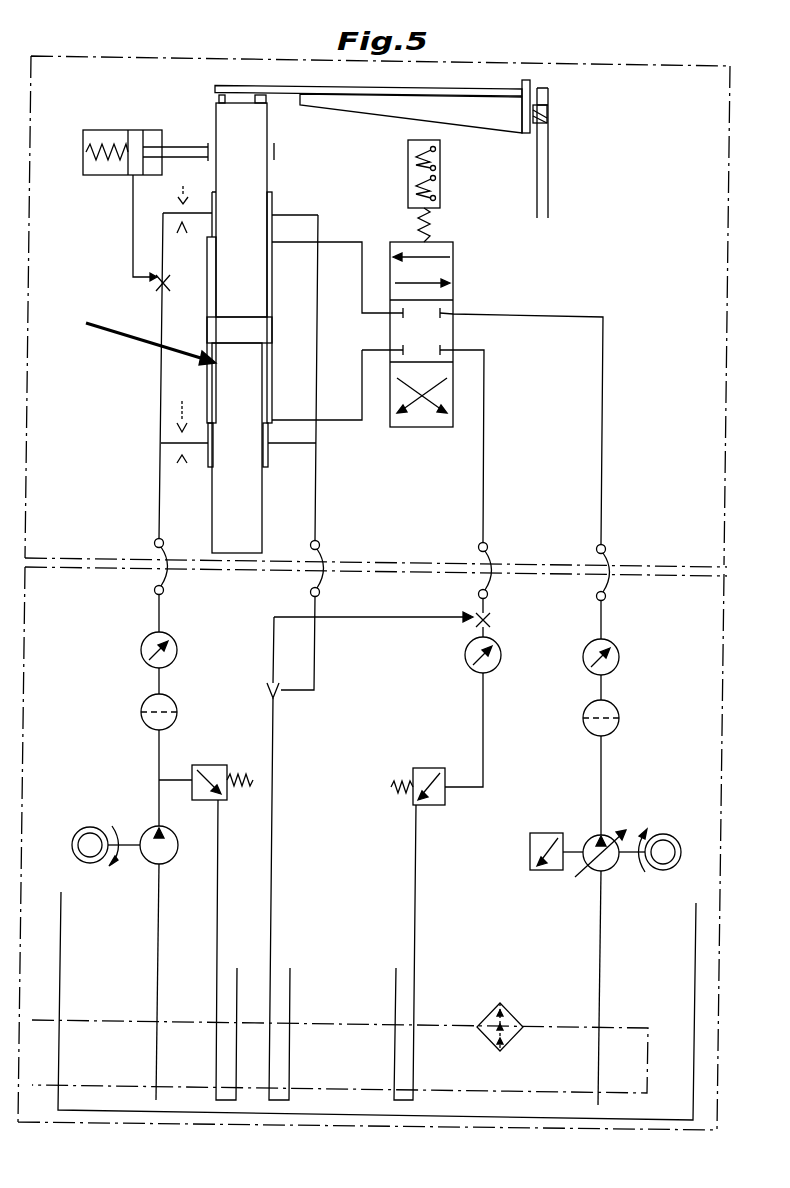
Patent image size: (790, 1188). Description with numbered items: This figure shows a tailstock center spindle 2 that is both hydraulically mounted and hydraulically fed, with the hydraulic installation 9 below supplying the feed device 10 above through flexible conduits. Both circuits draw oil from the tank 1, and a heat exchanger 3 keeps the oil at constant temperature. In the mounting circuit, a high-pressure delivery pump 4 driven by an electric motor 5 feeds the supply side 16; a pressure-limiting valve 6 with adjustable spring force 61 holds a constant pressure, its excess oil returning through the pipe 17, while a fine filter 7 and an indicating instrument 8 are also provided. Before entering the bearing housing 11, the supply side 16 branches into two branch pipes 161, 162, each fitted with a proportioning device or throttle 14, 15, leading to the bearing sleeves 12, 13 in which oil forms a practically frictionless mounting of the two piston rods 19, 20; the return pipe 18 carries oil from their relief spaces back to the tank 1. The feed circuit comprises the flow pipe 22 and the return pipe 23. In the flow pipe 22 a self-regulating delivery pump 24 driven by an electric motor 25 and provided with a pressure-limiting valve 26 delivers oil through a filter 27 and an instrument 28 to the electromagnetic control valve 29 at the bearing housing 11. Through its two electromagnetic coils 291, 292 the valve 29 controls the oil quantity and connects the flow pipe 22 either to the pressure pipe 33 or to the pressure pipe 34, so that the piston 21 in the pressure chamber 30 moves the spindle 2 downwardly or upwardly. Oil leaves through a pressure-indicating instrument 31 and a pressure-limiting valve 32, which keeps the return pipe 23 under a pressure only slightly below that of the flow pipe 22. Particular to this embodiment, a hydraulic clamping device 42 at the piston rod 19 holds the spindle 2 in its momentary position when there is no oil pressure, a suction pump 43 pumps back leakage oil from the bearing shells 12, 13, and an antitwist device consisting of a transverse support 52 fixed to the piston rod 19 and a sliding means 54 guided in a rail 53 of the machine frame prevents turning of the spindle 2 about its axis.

The oil tank 1 is at (675, 973).
The tailstock center spindle 2 is at (80, 339).
The heat exchanger 3 is at (488, 1022).
The high-pressure delivery pump 4 is at (165, 853).
The electric motor 5 is at (87, 828).
The pressure-limiting valve 6 is at (203, 770).
The fine filter 7 is at (146, 706).
The indicating instrument 8 is at (146, 640).
The hydraulic installation 9 is at (684, 778).
The feed device 10 is at (672, 419).
The bearing housing 11 is at (177, 363).
The bearing sleeve 12 is at (267, 460).
The bearing sleeve 13 is at (272, 202).
The throttle 14 is at (184, 404).
The throttle 15 is at (186, 183).
The supply side 16 is at (157, 1058).
The pipe 17 is at (227, 1077).
The return pipe 18 is at (282, 1073).
The piston rod 19 is at (225, 120).
The piston rod 20 is at (253, 492).
The piston 21 is at (215, 331).
The flow pipe 22 is at (595, 1062).
The return pipe 23 is at (403, 1077).
The delivery pump 24 is at (607, 865).
The electric motor 25 is at (667, 837).
The pressure-limiting valve 26 is at (543, 842).
The filter 27 is at (614, 725).
The instrument 28 is at (618, 670).
The electromagnetic control valve 29 is at (443, 273).
The pressure chamber 30 is at (210, 267).
The pressure-indicating instrument 31 is at (492, 665).
The pressure-limiting valve 32 is at (393, 780).
The pressure pipe 33 is at (343, 240).
The pressure pipe 34 is at (345, 422).
The hydraulic clamping device 42 is at (103, 137).
The suction pump 43 is at (270, 683).
The transverse support 52 is at (345, 88).
The rail 53 is at (531, 99).
The sliding means 54 is at (546, 118).
The adjustable spring force 61 is at (242, 777).
The branch pipe 161 is at (162, 228).
The branch pipe 162 is at (173, 447).
The electromagnetic coil 291 is at (440, 156).
The electromagnetic coil 292 is at (440, 195).